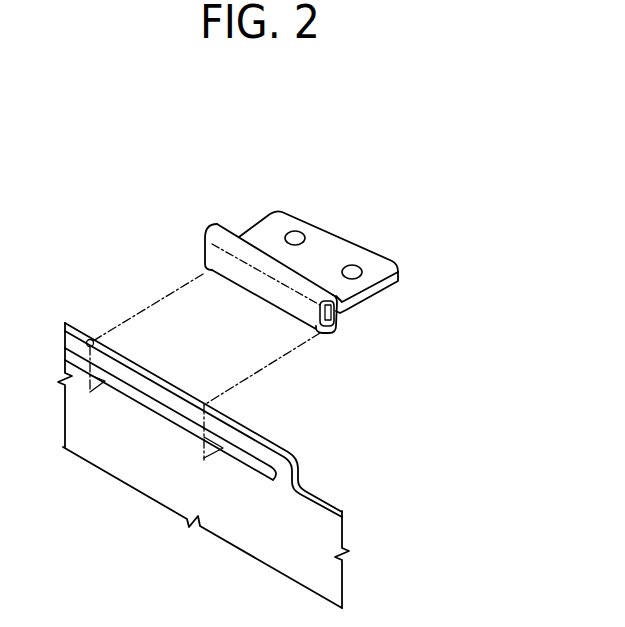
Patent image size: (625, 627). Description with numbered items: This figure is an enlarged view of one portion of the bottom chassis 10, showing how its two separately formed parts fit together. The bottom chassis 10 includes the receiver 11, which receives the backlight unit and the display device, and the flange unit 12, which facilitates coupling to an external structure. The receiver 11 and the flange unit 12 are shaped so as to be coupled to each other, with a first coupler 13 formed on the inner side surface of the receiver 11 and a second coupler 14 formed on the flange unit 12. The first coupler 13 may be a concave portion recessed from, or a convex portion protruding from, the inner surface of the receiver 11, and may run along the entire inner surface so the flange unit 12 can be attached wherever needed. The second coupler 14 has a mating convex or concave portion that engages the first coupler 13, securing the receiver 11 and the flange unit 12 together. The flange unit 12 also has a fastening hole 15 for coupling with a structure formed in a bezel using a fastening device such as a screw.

The bottom chassis 10 is at (253, 156).
The receiver 11 is at (297, 461).
The flange unit 12 is at (380, 293).
The first coupler 13 is at (145, 400).
The second coupler 14 is at (331, 312).
The fastening hole 15 is at (299, 232).